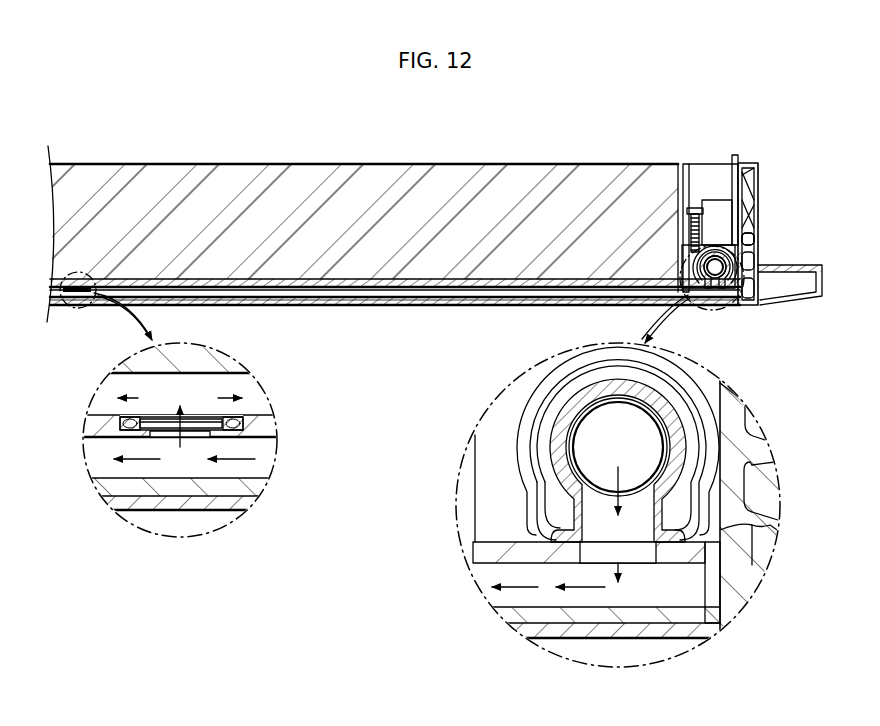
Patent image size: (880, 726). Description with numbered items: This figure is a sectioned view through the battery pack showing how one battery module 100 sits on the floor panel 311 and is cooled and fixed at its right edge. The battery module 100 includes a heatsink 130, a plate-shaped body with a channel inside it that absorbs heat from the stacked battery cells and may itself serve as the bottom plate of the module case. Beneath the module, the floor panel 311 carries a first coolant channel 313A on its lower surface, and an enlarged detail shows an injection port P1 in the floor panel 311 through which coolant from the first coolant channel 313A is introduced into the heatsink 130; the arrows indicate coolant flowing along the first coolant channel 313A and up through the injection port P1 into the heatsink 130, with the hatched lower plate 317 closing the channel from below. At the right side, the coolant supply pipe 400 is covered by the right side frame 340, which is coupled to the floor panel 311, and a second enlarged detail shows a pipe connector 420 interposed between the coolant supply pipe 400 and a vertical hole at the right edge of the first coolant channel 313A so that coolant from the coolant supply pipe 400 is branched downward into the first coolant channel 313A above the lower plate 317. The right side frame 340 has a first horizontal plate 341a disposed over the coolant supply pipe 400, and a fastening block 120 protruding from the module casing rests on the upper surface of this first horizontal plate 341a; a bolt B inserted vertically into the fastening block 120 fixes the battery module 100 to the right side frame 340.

The battery module 100 is at (386, 160).
The fastening block 120 is at (686, 215).
The bolt B is at (696, 208).
The heatsink 130 is at (244, 283).
The right side frame 340 is at (759, 208).
The first horizontal plate 341a is at (741, 238).
The injection port P1 is at (120, 421).
The floor panel 311 is at (268, 428).
The first coolant channel 313A is at (268, 454).
The lower plate 317 is at (218, 505).
The coolant supply pipe 400 is at (692, 430).
The pipe connector 420 is at (742, 533).